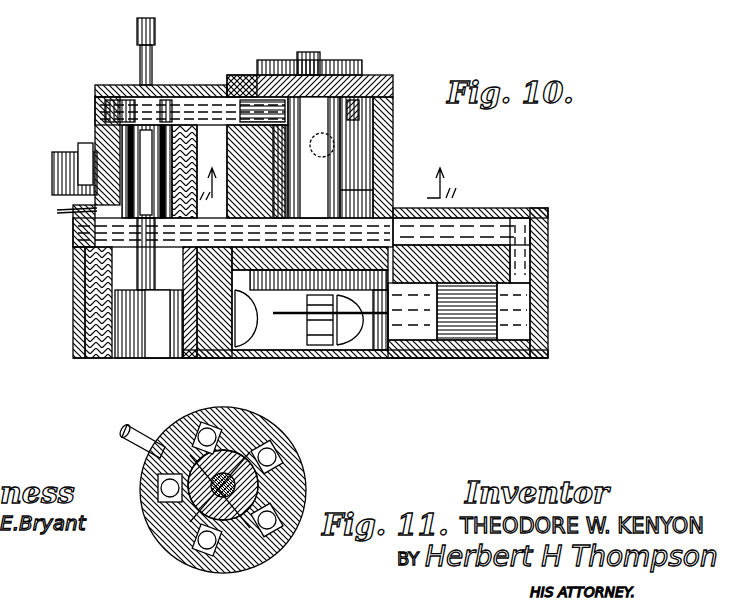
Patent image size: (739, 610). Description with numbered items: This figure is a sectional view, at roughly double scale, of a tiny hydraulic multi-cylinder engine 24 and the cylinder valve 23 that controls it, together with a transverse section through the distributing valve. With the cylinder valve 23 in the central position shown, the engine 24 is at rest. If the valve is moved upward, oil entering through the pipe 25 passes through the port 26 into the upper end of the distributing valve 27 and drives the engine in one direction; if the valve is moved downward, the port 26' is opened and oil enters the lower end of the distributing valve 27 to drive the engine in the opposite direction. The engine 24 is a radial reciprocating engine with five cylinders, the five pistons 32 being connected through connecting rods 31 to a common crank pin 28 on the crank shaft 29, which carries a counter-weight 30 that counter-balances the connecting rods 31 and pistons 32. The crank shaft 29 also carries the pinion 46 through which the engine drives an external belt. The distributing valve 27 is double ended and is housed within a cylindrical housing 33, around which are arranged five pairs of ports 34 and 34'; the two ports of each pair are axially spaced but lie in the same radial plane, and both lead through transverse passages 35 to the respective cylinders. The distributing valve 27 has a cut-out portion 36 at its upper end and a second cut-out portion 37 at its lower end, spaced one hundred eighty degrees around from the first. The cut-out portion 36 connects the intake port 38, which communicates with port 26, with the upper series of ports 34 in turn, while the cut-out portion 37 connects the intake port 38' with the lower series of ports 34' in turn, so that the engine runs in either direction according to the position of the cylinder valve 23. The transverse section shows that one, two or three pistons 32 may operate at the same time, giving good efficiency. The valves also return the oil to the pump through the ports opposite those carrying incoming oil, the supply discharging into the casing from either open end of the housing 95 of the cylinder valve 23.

In FIG. 10, the cylinder valve 23 is at (128, 97).
In FIG. 10, the hydraulic multi-cylinder engine 24 is at (310, 303).
In FIG. 10, the pipe 25 is at (52, 165).
In FIG. 10, the port 26 is at (238, 126).
In FIG. 10, the port 26' is at (149, 306).
In FIG. 10, the distributing valve 27 is at (314, 157).
In FIG. 10, the crank pin 28 is at (327, 337).
In FIG. 10, the crank shaft 29 is at (307, 50).
In FIG. 10, the counter-weight 30 is at (293, 285).
In FIG. 10, the connecting rods 31 is at (378, 305).
In FIG. 10, the pistons 32 is at (457, 353).
In FIG. 10, the cylindrical housing 33 is at (393, 102).
In FIG. 10, the ports 34 is at (327, 123).
In FIG. 10, the ports 34' is at (390, 177).
In FIG. 11, the ports 34' is at (226, 446).
In FIG. 10, the transverse passages 35 is at (528, 228).
In FIG. 11, the transverse passages 35 is at (267, 457).
In FIG. 10, the cut-out portion 36 is at (280, 100).
In FIG. 11, the cut-out portion 36 is at (198, 472).
In FIG. 10, the cut-out portion 37 is at (350, 233).
In FIG. 10, the intake port 38 is at (191, 111).
In FIG. 10, the intake port 38' is at (233, 233).
In FIG. 10, the pinion 46 is at (330, 60).
In FIG. 10, the housing 95 is at (95, 211).